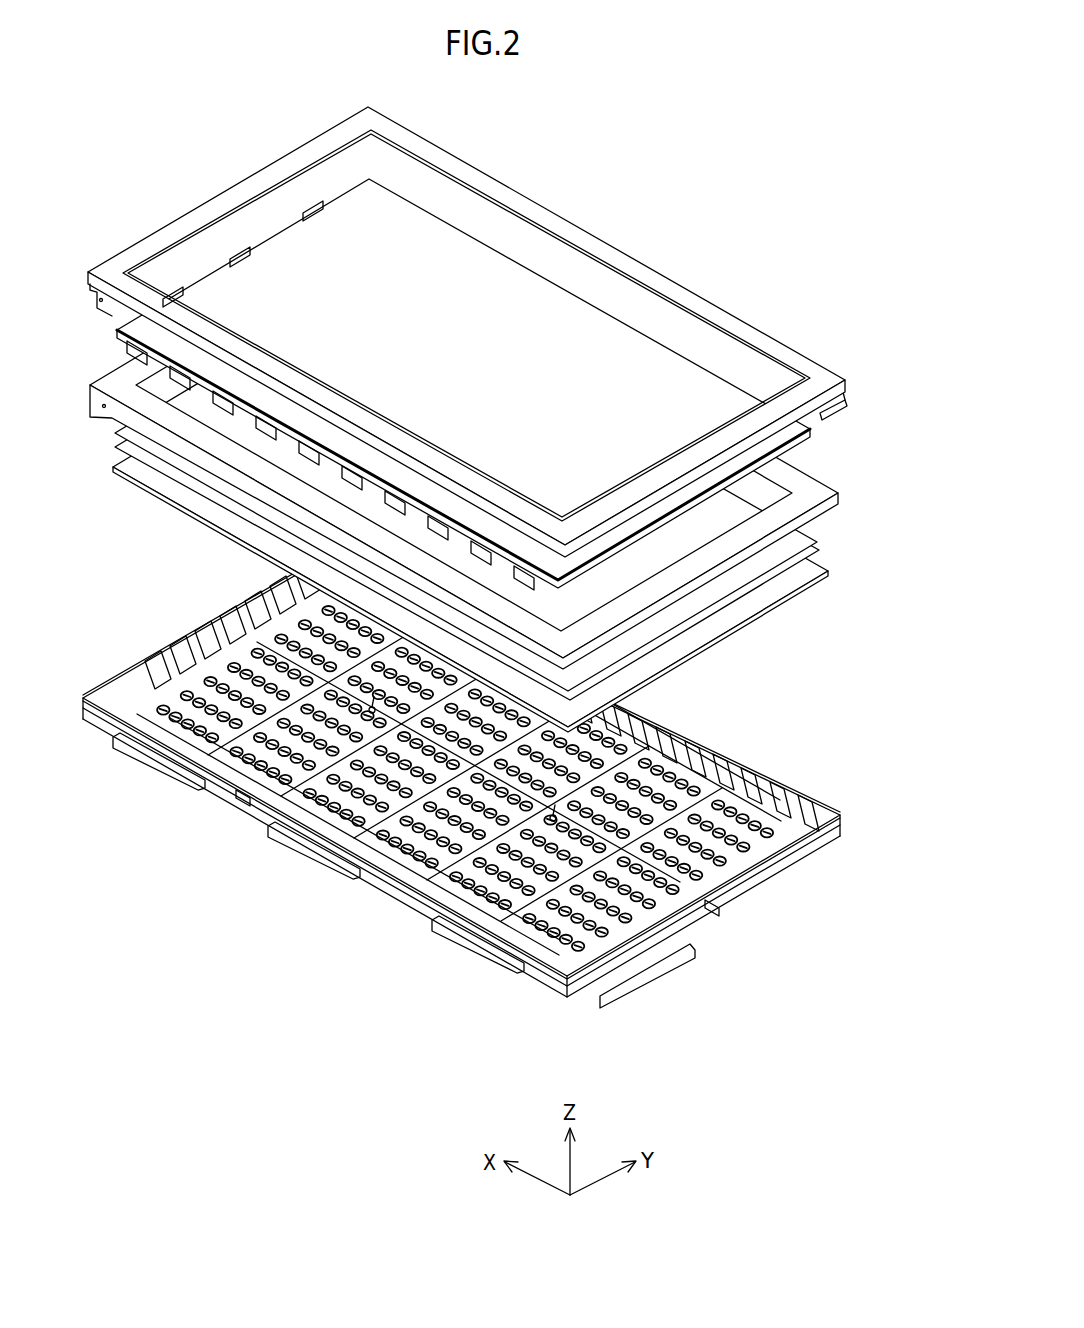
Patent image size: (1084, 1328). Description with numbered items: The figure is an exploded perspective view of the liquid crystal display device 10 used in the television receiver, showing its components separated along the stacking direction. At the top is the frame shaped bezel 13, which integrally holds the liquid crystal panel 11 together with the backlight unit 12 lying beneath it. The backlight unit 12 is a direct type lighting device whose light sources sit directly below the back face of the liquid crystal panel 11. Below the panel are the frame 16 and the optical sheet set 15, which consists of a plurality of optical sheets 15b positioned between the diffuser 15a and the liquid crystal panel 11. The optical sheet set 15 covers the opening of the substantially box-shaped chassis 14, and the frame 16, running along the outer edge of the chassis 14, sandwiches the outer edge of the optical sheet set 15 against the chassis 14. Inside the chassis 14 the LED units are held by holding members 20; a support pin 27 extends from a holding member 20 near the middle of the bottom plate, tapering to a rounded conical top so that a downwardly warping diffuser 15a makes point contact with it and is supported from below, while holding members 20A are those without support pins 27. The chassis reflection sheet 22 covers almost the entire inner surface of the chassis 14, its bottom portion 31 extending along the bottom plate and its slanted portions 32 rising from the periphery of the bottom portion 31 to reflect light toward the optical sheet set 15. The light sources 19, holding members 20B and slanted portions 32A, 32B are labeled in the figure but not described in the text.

The liquid crystal display device 10 is at (501, 576).
The liquid crystal panel 11 is at (598, 308).
The backlight unit 12 is at (501, 641).
The bezel 13 is at (523, 195).
The chassis 14 is at (494, 812).
The optical sheet set 15 is at (516, 508).
The diffuser 15a is at (814, 583).
The optical sheets 15b is at (822, 542).
The frame 16 is at (830, 482).
The LED 19 is at (240, 692).
The holding members 20 is at (504, 816).
The holding members without support pins 20A is at (703, 794).
The LED board 20B is at (553, 821).
The chassis reflection sheet 22 is at (572, 982).
The support pin 27 is at (250, 785).
The bottom portion 31 is at (178, 690).
The slanted portions 32 is at (538, 762).
The LED row 32A is at (755, 875).
The LED row 32B is at (718, 868).